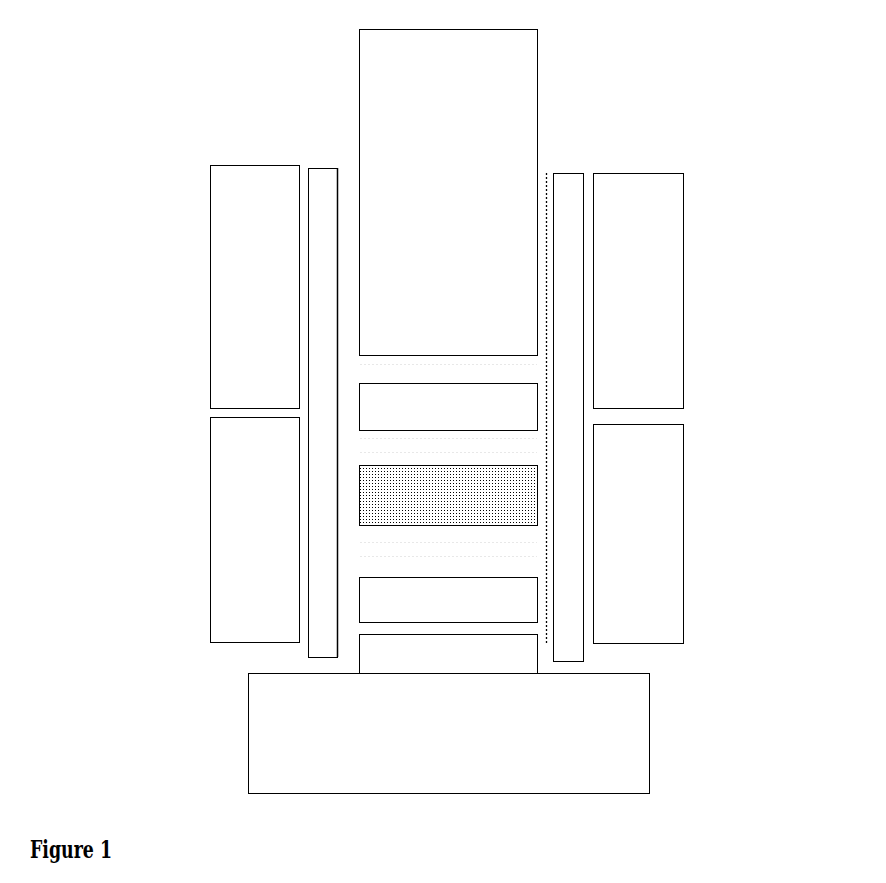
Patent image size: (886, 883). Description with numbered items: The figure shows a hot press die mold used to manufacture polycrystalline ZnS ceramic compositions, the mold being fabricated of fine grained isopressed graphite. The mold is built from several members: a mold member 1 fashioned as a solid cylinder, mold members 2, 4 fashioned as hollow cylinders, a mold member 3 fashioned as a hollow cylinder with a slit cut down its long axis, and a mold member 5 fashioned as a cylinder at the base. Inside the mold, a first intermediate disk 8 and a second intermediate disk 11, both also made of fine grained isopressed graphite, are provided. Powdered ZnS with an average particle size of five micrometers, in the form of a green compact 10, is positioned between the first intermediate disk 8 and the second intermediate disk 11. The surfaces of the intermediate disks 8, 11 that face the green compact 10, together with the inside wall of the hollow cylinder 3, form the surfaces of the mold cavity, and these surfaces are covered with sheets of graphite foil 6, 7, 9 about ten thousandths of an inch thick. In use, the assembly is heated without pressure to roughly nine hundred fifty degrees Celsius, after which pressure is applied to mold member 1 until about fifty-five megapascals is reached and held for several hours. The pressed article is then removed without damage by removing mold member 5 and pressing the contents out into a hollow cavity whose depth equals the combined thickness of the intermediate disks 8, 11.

The mold member 1 is at (352, 191).
The mold member 2 is at (204, 288).
The mold member 3 is at (302, 413).
The mold member 4 is at (204, 531).
The mold member 5 is at (235, 739).
The graphite foil 6 is at (555, 286).
The graphite foil 7 is at (535, 364).
The first intermediate disk 8 is at (548, 405).
The graphite foil 9 is at (548, 437).
The green compact 10 is at (548, 493).
The second intermediate disk 11 is at (548, 596).